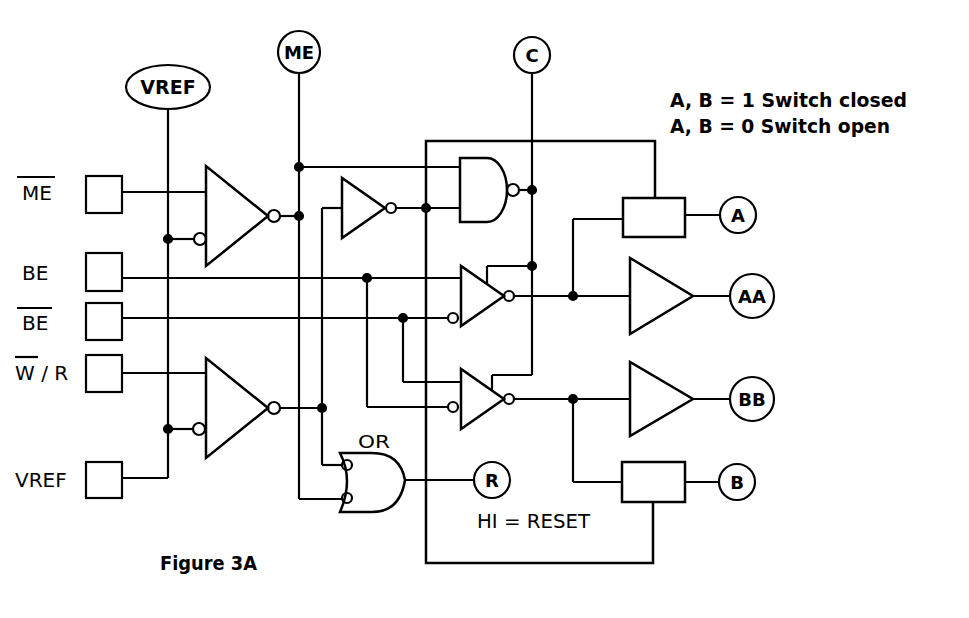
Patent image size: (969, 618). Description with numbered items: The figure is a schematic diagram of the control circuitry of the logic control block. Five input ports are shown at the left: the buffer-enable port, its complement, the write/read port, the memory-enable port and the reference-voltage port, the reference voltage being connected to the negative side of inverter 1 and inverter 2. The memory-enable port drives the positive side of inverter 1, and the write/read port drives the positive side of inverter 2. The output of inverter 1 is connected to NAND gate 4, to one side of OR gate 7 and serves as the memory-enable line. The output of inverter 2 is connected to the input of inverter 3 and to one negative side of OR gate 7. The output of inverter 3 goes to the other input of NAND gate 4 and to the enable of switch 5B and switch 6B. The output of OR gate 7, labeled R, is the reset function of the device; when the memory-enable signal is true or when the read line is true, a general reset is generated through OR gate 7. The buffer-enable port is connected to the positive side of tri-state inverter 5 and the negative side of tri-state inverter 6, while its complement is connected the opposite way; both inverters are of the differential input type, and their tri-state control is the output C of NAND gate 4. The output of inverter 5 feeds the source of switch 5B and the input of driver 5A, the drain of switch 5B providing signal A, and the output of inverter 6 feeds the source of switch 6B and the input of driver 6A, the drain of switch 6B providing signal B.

The inverter 1 is at (246, 216).
The inverter 2 is at (257, 408).
The inverter 3 is at (401, 208).
The NAND gate 4 is at (496, 190).
The tri-state inverter 5 is at (539, 296).
The tri-state inverter 6 is at (539, 399).
The OR gate 7 is at (407, 482).
The driver 5A is at (680, 296).
The driver 6A is at (680, 399).
The switch 5B is at (646, 217).
The switch 6B is at (646, 482).